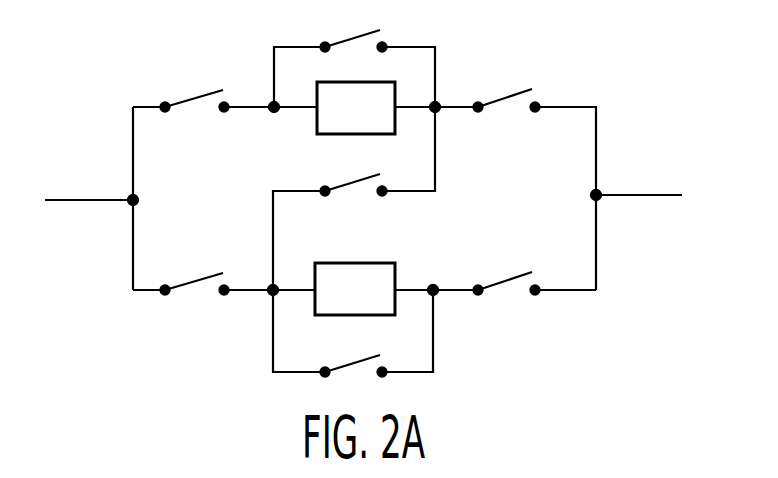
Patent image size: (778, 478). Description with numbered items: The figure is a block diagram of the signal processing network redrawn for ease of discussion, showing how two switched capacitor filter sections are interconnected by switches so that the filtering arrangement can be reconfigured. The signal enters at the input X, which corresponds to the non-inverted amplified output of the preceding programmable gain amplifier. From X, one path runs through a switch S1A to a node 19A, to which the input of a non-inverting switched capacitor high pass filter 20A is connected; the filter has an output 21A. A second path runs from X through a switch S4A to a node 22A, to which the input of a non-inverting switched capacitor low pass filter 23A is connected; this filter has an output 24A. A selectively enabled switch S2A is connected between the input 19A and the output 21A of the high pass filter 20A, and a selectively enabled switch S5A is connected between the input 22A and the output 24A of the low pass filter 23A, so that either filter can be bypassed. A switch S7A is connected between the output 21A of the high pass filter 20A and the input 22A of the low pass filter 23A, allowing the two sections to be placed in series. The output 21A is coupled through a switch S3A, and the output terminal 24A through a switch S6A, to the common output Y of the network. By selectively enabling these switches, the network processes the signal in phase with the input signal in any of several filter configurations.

The input X is at (131, 195).
The output Y is at (600, 194).
The switch S1A is at (194, 86).
The selectively enabled switch S2A is at (353, 29).
The switch S3A is at (503, 88).
The switch S4A is at (194, 274).
The selectively enabled switch S5A is at (353, 378).
The switch S6A is at (506, 272).
The switch S7A is at (353, 197).
The node 19A is at (272, 112).
The non-inverting switched capacitor high pass filter 20A is at (335, 136).
The output 21A is at (437, 112).
The node 22A is at (271, 295).
The non-inverting switched capacitor low pass filter 23A is at (381, 267).
The output terminal 24A is at (435, 295).